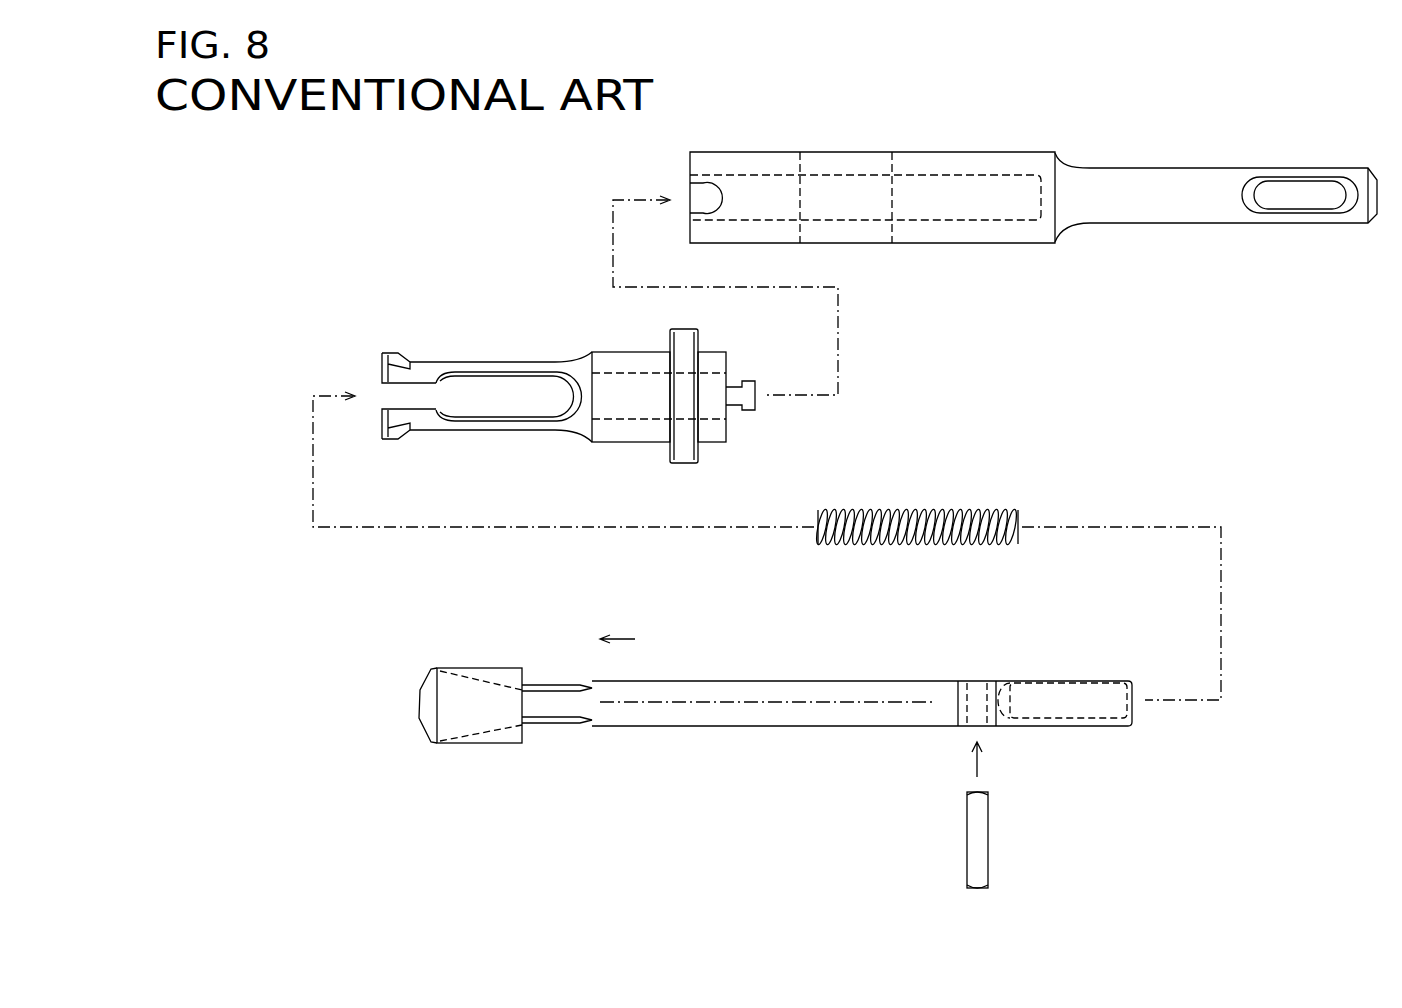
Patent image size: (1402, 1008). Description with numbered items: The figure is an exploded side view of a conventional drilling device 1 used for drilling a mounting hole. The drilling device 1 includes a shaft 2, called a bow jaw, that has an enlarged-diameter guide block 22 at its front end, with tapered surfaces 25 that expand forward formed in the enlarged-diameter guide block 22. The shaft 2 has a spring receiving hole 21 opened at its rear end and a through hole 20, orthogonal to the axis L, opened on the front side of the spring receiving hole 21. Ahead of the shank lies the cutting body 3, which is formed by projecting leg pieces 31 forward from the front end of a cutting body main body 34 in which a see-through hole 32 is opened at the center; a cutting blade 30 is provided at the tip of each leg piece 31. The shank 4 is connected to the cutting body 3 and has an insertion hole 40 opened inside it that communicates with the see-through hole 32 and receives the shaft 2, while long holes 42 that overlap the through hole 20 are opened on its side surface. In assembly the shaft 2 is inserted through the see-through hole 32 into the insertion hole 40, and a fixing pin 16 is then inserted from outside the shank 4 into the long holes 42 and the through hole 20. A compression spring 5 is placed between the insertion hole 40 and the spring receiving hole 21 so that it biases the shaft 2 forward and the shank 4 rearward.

The drilling device 1 is at (1287, 656).
The shaft 2 is at (775, 742).
The cutting body 3 is at (585, 387).
The shank 4 is at (1033, 190).
The compression spring 5 is at (938, 508).
The fixing pin 16 is at (990, 838).
The through hole 20 is at (968, 700).
The spring receiving hole 21 is at (1062, 685).
The enlarged-diameter guide block 22 is at (467, 712).
The tapered surfaces 25 is at (487, 690).
The cutting blade 30 is at (400, 360).
The leg piece 31 is at (497, 370).
The see-through hole 32 is at (624, 385).
The cutting body main body 34 is at (608, 351).
The insertion hole 40 is at (975, 180).
The long hole 42 is at (810, 165).
The axis L is at (825, 700).